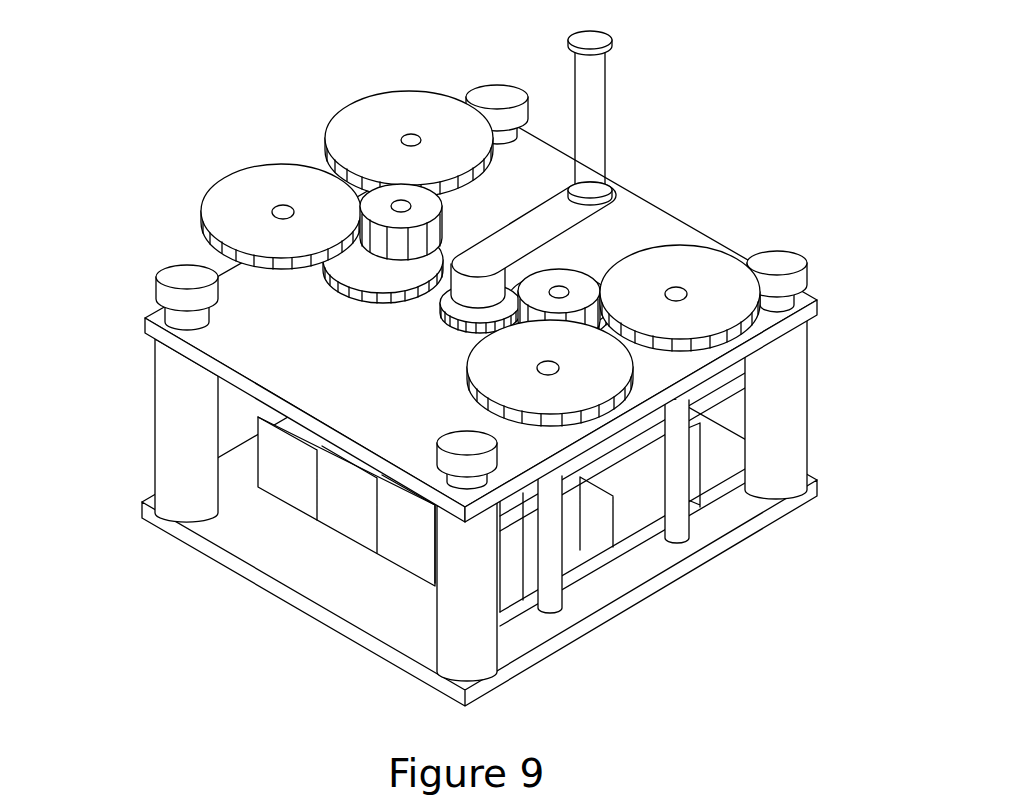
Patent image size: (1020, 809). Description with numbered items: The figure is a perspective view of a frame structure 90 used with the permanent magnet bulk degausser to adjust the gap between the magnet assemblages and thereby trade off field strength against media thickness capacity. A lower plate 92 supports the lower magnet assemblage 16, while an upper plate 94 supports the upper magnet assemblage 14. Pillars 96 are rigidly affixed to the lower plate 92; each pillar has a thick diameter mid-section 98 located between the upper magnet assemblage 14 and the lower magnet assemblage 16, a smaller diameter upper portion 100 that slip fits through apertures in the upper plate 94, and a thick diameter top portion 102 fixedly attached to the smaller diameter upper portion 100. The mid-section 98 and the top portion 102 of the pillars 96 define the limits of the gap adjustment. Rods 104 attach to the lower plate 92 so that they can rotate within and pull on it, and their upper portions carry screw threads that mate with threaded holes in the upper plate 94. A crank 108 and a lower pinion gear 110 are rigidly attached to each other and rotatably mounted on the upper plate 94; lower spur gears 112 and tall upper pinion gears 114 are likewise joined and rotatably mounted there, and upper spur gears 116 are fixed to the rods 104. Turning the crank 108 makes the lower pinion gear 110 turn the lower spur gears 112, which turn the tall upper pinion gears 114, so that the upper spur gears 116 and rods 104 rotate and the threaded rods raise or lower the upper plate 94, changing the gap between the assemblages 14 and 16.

The upper magnet assemblage 14 is at (622, 460).
The lower magnet assemblage 16 is at (342, 556).
The frame structure 90 is at (476, 370).
The lower plate 92 is at (292, 553).
The upper plate 94 is at (622, 220).
The pillars 96 is at (466, 508).
The thick diameter mid-section 98 is at (182, 430).
The smaller diameter upper portion 100 is at (180, 322).
The thick diameter top portion 102 is at (163, 302).
The rods 104 is at (682, 487).
The crank 108 is at (590, 118).
The lower pinion gear 110 is at (378, 279).
The lower spur gears 112 is at (458, 292).
The tall upper pinion gears 114 is at (551, 217).
The upper spur gears 116 is at (529, 242).